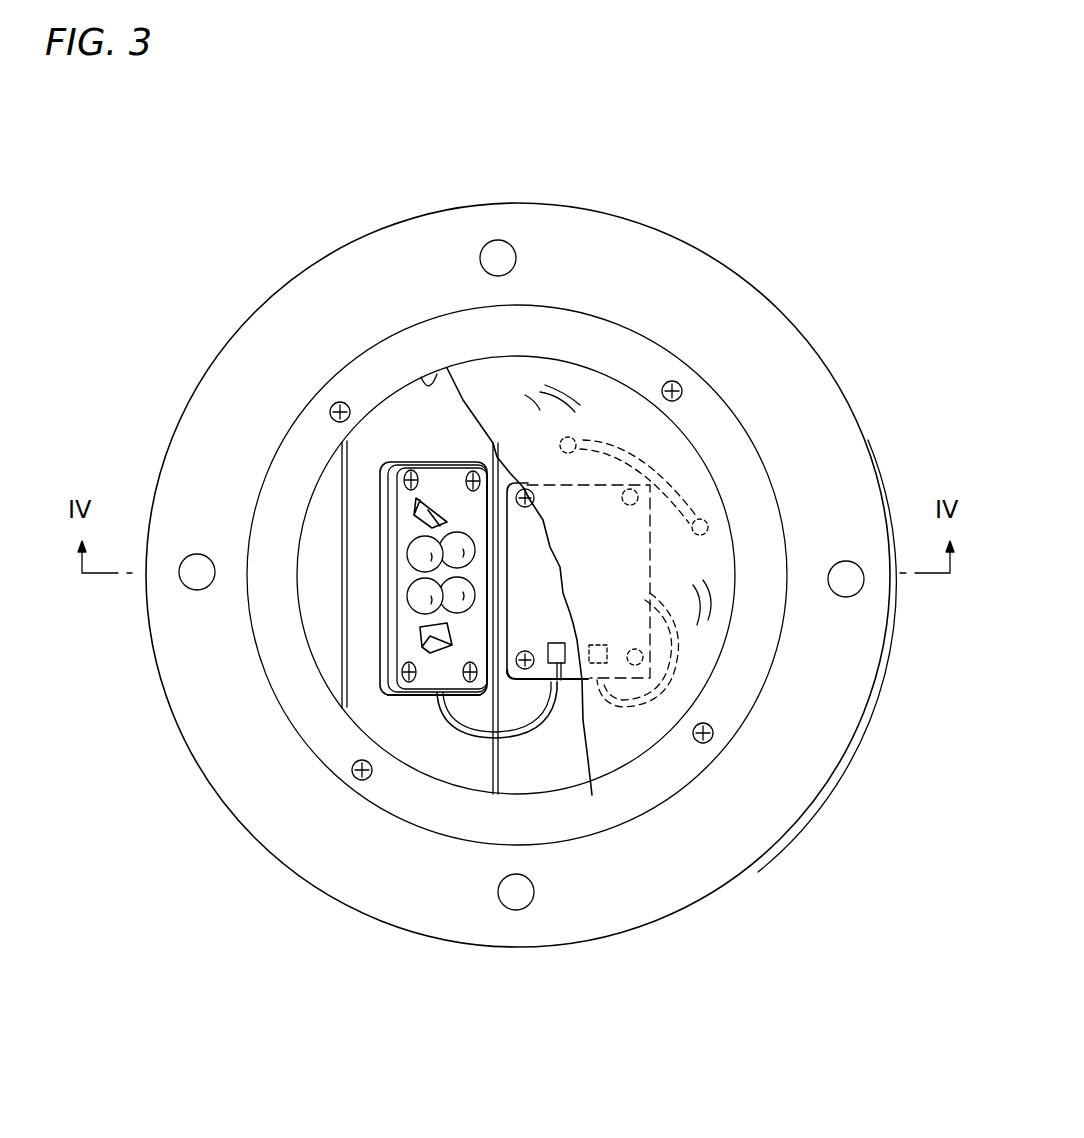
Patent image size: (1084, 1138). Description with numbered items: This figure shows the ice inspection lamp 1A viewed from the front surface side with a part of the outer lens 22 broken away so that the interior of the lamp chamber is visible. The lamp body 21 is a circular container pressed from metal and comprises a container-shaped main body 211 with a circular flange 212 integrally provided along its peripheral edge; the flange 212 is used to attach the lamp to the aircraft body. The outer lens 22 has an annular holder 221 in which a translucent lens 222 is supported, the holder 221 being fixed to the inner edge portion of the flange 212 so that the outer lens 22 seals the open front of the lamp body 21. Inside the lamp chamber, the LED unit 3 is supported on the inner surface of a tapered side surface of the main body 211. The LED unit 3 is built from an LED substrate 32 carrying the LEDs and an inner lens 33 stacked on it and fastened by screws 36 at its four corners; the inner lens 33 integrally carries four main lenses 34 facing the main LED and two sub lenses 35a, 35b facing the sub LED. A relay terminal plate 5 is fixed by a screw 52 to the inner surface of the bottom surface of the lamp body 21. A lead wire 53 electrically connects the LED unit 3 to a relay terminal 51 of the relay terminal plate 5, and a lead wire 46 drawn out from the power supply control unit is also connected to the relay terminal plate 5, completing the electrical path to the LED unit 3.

The ice inspection lamp 1A is at (618, 213).
The lamp body 21 is at (484, 204).
The main body 211 is at (420, 378).
The flange 212 is at (757, 815).
The outer lens 22 is at (632, 332).
The holder 221 is at (717, 600).
The lens 222 is at (733, 697).
The LED unit 3 is at (377, 487).
The LED substrate 32 is at (412, 632).
The inner lens 33 is at (403, 523).
The main lenses 34 is at (405, 592).
The sub lens 35a is at (422, 647).
The sub lens 35b is at (443, 520).
The screws 36 is at (392, 686).
The lead wire 46 is at (640, 710).
The relay terminal plate 5 is at (623, 485).
The relay terminal 51 is at (563, 682).
The screw 52 is at (525, 672).
The lead wire 53 is at (462, 724).